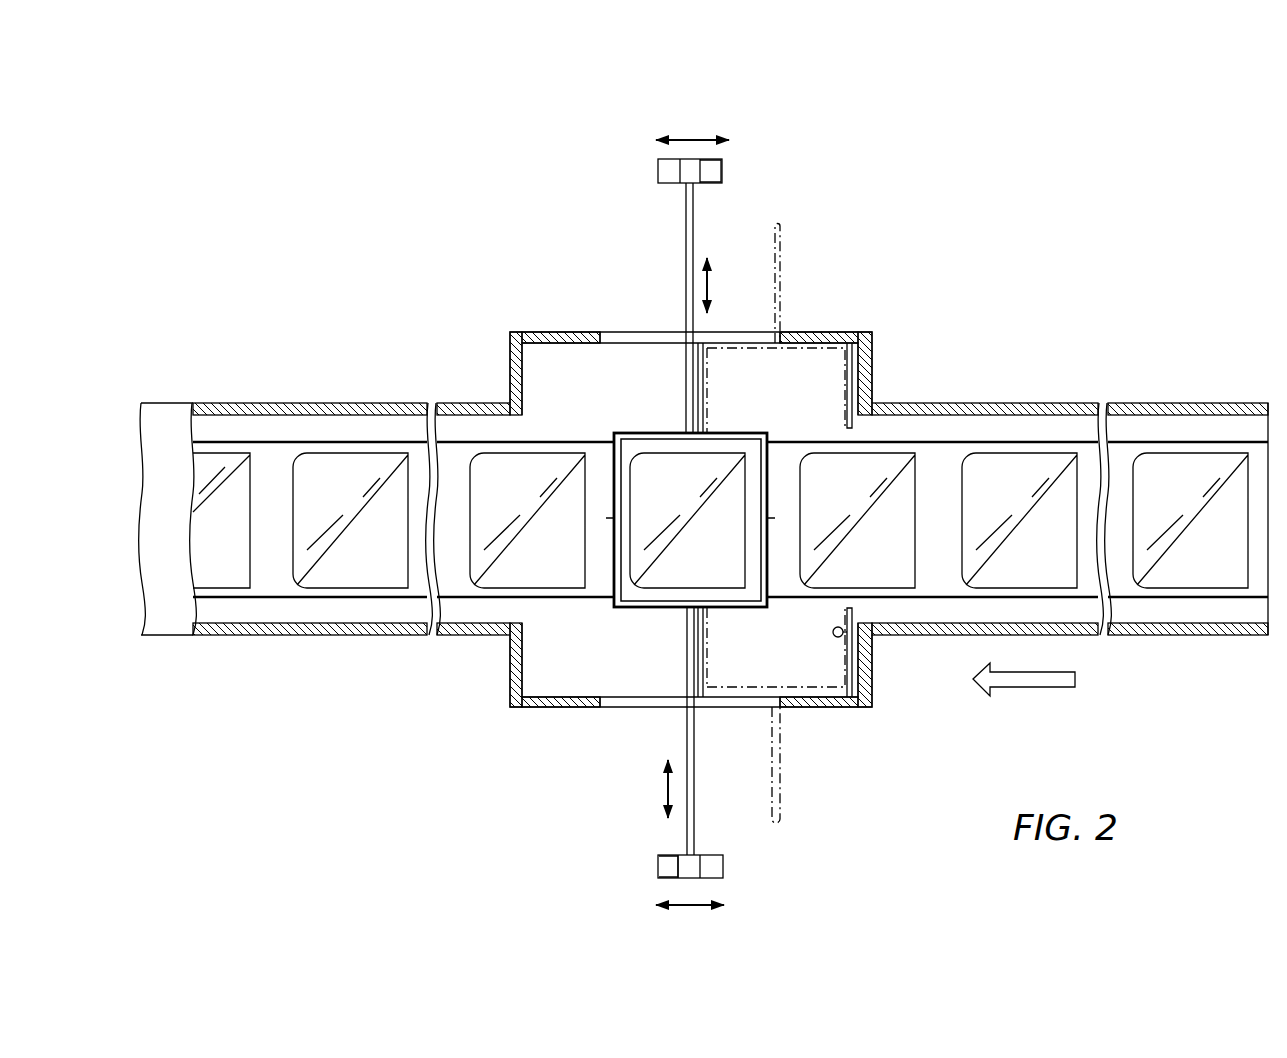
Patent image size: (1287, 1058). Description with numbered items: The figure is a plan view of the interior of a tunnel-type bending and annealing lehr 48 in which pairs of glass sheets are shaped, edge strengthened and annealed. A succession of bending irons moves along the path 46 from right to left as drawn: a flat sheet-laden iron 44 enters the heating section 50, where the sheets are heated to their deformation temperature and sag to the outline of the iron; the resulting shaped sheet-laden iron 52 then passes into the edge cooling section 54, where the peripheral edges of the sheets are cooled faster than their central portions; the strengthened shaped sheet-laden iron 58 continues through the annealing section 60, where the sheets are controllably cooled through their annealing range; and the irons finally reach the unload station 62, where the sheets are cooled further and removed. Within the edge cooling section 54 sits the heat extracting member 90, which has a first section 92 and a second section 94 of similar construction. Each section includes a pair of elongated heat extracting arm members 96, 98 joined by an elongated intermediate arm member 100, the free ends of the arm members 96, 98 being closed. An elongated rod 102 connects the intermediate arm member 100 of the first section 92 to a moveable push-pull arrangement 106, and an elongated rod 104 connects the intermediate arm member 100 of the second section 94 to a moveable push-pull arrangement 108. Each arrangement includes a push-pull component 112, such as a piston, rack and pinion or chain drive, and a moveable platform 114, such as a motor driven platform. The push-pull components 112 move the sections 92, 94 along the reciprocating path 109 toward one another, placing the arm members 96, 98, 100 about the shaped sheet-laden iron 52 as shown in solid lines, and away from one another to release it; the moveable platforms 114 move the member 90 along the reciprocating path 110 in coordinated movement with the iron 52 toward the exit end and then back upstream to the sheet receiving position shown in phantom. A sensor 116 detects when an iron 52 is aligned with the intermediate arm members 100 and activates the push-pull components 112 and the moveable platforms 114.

The flat sheet-laden iron 44 is at (1134, 564).
The path 46 is at (1026, 688).
The bending and annealing lehr 48 is at (977, 250).
The heating section 50 is at (1060, 383).
The shaped sheet-laden iron 52 is at (800, 556).
The edge cooling section 54 is at (542, 316).
The strengthened shaped sheet-laden iron 58 is at (251, 502).
The annealing section 60 is at (445, 383).
The unload station 62 is at (182, 380).
The heat extracting member 90 is at (680, 298).
The first section 92 is at (683, 375).
The second section 94 is at (684, 680).
The heat extracting arm member 96 is at (710, 396).
The heat extracting arm member 98 is at (844, 426).
The intermediate arm member 100 is at (722, 431).
The elongated rod 102 is at (697, 242).
The elongated rod 104 is at (694, 748).
The moveable push-pull arrangement 106 is at (656, 168).
The moveable push-pull arrangement 108 is at (725, 866).
The reciprocating path 109 is at (710, 298).
The reciprocating path 110 is at (691, 138).
The push-pull component 112 is at (690, 171).
The moveable platform 114 is at (723, 172).
The sensor 116 is at (833, 630).